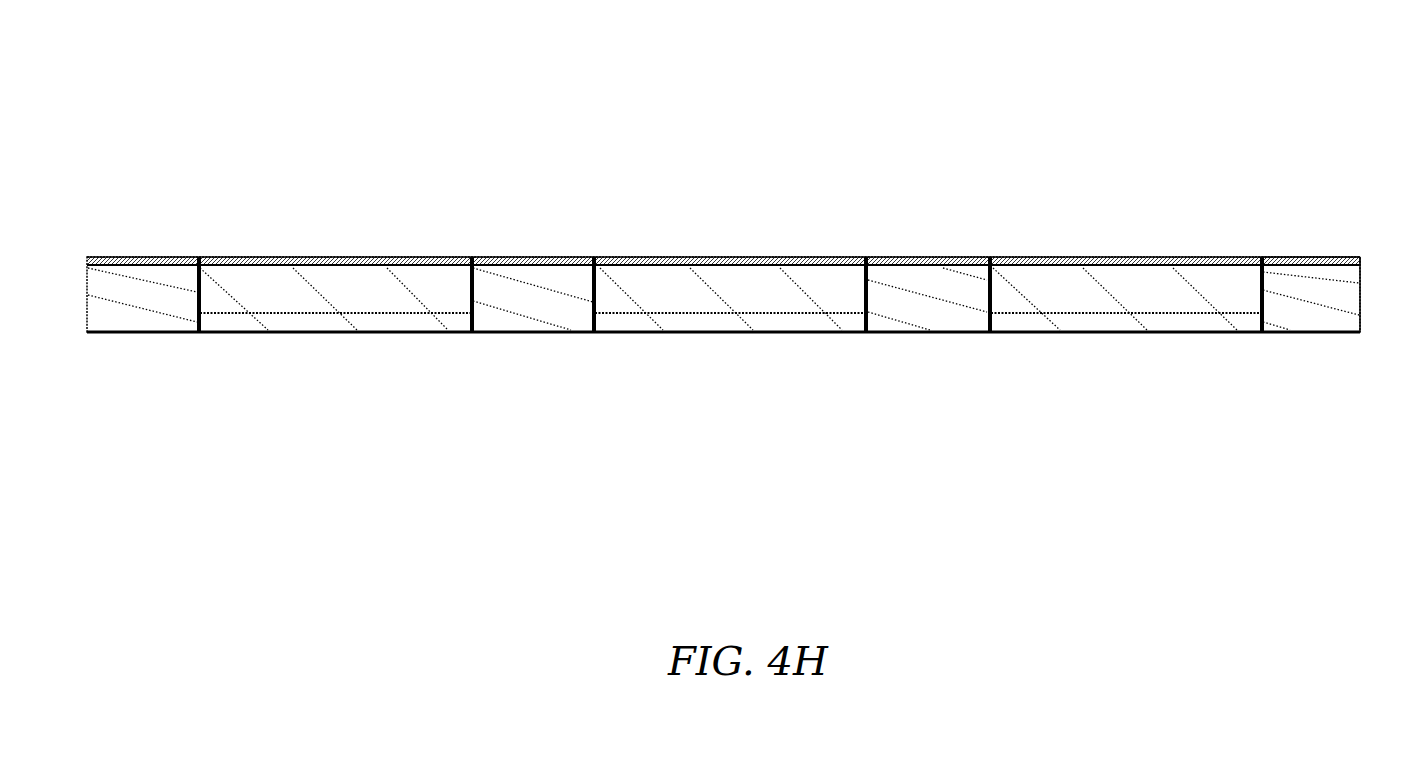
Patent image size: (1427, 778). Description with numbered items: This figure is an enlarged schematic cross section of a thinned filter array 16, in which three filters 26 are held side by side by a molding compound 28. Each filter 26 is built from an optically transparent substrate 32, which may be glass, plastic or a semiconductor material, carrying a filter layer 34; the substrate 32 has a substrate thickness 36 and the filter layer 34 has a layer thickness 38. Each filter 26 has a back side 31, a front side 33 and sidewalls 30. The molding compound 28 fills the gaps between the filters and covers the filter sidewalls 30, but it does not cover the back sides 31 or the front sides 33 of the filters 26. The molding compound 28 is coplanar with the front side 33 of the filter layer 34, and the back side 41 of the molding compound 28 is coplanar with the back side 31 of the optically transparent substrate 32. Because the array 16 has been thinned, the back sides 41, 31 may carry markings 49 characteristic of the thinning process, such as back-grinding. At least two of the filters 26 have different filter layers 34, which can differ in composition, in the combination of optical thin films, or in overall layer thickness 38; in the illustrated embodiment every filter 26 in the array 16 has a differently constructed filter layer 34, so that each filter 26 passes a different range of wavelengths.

The thinned filter array 16 is at (999, 74).
The filter 26 is at (1016, 248).
The molding compound 28 is at (173, 290).
The sidewall 30 is at (996, 291).
The back side 31 is at (750, 255).
The optically transparent substrate 32 is at (348, 294).
The front side 33 is at (698, 336).
The filter layer 34 is at (320, 324).
The substrate thickness 36 is at (641, 270).
The layer thickness 38 is at (791, 273).
The back side of the molding compound 41 is at (1328, 255).
The markings 49 is at (1370, 263).